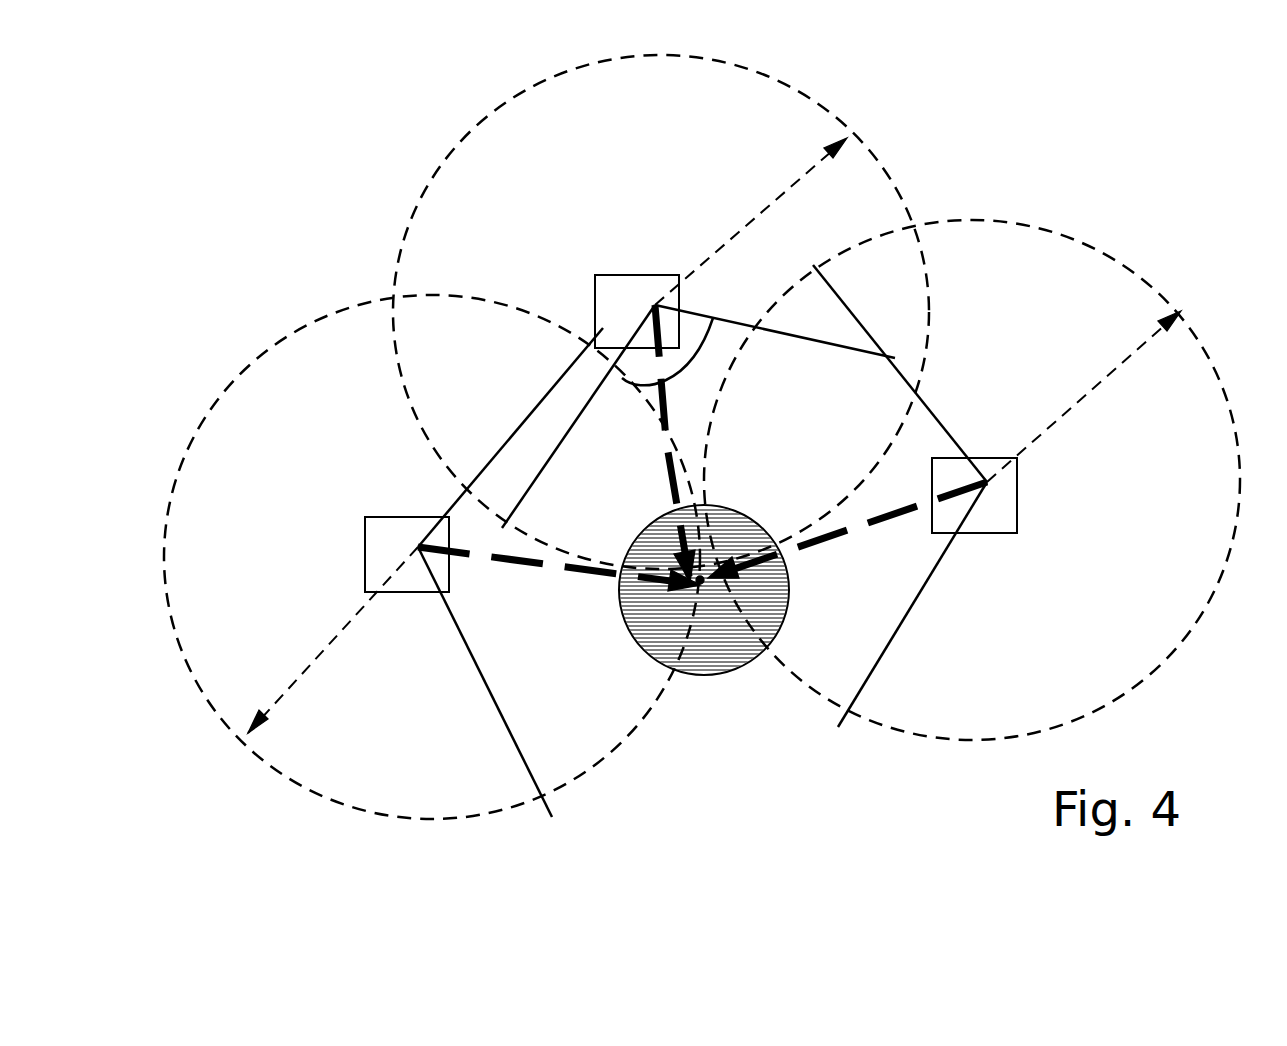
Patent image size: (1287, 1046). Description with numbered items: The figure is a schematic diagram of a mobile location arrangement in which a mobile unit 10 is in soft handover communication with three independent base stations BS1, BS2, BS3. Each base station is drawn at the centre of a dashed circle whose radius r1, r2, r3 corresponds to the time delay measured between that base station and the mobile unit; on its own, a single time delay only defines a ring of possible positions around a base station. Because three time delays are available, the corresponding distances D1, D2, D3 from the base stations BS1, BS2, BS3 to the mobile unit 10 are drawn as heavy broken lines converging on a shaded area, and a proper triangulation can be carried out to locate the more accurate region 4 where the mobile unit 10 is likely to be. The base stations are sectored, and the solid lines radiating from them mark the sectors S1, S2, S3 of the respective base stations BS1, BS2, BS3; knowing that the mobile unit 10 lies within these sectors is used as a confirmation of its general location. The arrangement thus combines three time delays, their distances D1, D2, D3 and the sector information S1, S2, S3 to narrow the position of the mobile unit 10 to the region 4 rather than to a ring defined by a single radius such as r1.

The base station BS1 is at (375, 540).
The base station BS2 is at (1007, 493).
The base station BS3 is at (618, 285).
The sector S1 is at (462, 650).
The sector S2 is at (962, 543).
The sector S3 is at (728, 313).
The radius r1 is at (432, 557).
The cell radius of second base station r2 is at (972, 480).
The cell radius of third base station r3 is at (661, 312).
The distance D1 is at (593, 585).
The distance D2 is at (842, 540).
The distance D3 is at (650, 497).
The region 4 is at (752, 668).
The mobile unit 10 is at (712, 603).